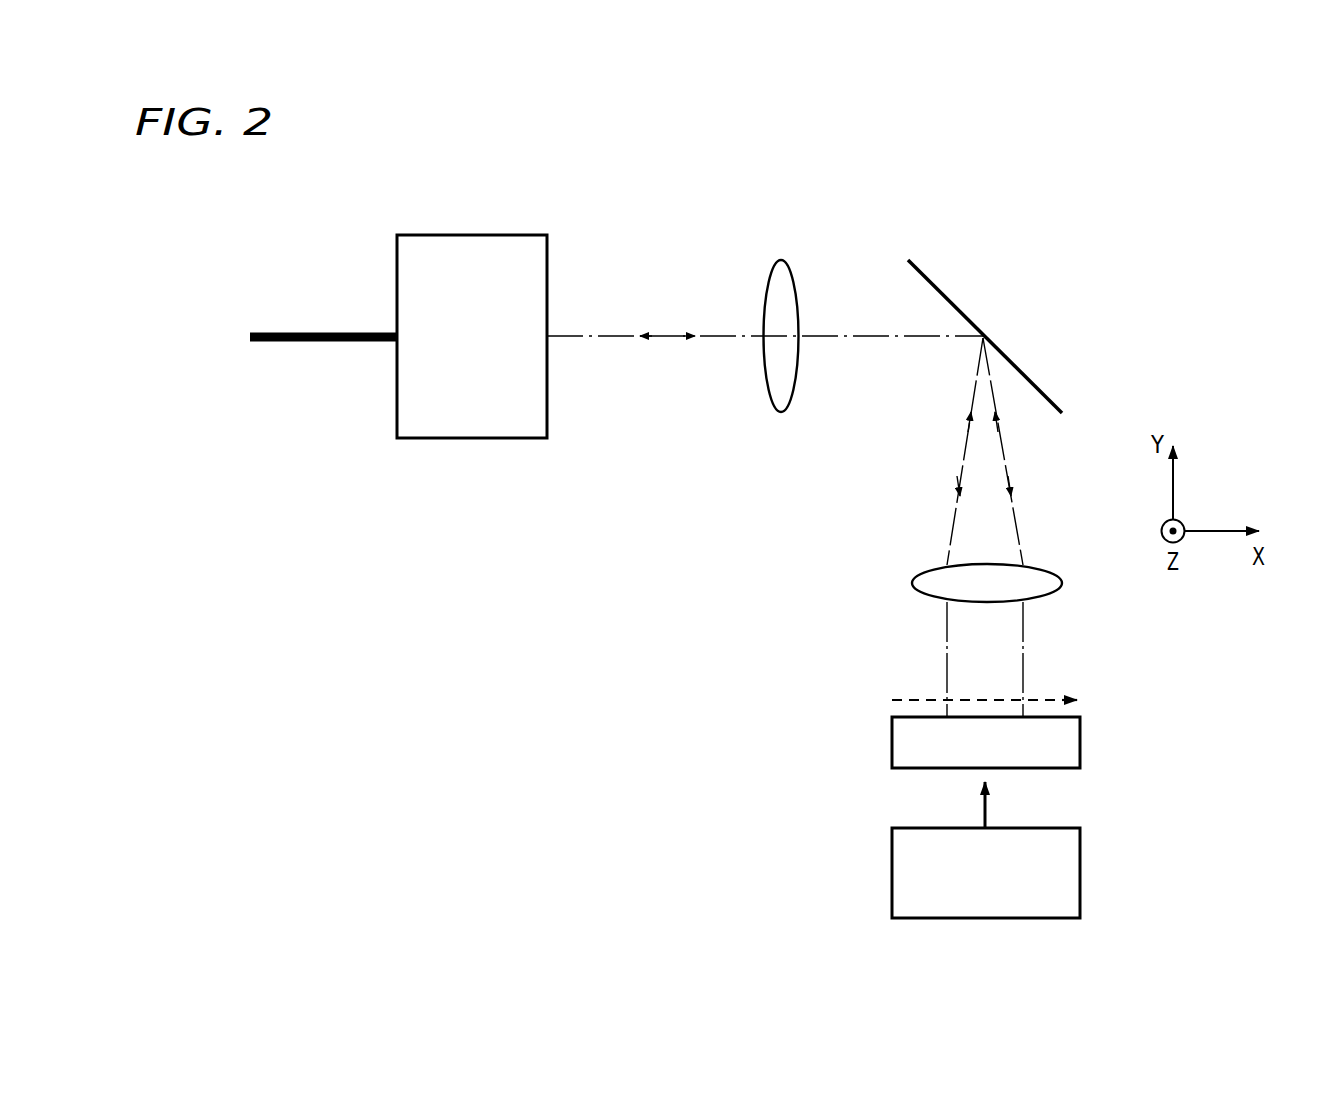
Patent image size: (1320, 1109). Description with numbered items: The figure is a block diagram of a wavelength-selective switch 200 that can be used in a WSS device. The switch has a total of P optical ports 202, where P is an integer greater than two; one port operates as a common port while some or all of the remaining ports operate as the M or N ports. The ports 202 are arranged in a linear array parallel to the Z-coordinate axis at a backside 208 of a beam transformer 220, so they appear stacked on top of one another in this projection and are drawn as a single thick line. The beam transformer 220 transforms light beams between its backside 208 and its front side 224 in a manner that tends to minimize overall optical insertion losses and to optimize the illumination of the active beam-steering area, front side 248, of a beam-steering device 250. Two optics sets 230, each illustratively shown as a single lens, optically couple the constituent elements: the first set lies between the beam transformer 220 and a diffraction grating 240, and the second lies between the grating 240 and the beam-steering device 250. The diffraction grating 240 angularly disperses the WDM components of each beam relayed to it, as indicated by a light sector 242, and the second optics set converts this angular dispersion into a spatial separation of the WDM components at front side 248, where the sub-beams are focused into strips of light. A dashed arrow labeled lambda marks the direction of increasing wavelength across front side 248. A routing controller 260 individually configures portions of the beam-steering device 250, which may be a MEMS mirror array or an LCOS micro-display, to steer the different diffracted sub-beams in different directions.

The wavelength-selective switch 200 is at (222, 187).
The optical ports 202 is at (310, 344).
The backside 208 is at (388, 261).
The beam transformer 220 is at (472, 234).
The front side 224 is at (558, 261).
The optics sets 230 is at (784, 258).
The diffraction grating 240 is at (952, 299).
The light sector 242 is at (966, 432).
The front side of beam-steering device 248 is at (985, 712).
The beam-steering device 250 is at (1081, 745).
The routing controller 260 is at (1081, 878).